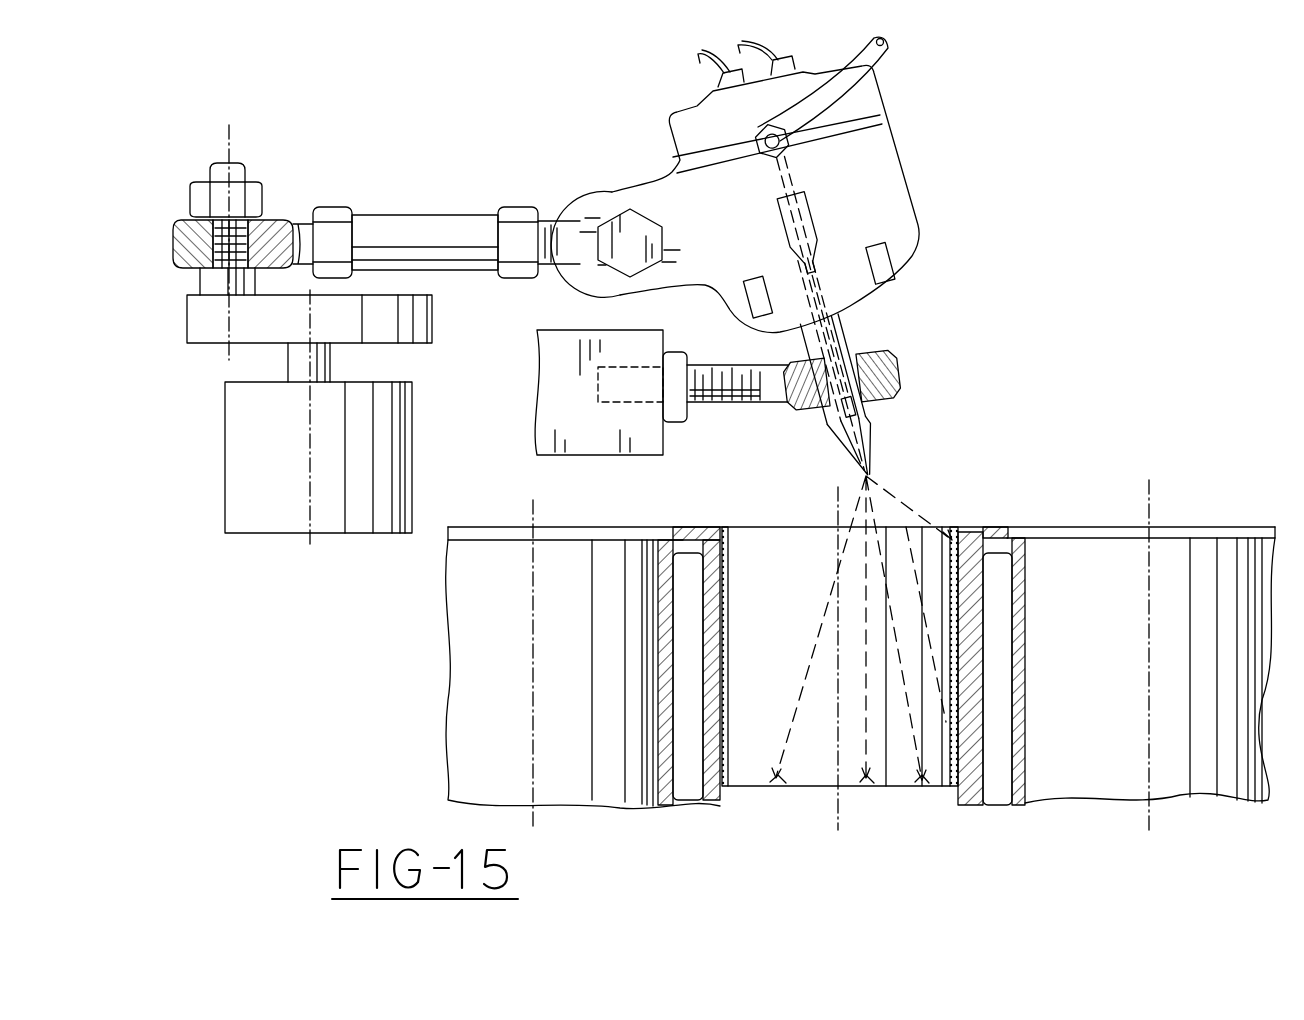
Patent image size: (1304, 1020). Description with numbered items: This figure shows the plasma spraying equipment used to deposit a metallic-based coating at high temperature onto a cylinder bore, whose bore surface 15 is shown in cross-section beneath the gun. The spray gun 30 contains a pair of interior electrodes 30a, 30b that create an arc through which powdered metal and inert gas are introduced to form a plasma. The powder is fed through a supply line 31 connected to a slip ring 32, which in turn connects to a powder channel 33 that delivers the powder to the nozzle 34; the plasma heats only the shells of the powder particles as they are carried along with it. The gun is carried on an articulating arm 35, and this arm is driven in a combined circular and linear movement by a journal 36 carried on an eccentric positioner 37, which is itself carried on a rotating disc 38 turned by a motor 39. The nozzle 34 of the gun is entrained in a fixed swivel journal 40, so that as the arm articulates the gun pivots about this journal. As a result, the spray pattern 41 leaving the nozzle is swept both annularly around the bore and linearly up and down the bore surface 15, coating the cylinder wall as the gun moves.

The bore surface 15 is at (728, 640).
The spray gun 30 is at (905, 139).
The interior electrode 30a is at (833, 412).
The interior electrode 30b is at (838, 440).
The supply line 31 is at (884, 48).
The slip ring 32 is at (866, 107).
The powder channel 33 is at (781, 160).
The nozzle 34 is at (875, 455).
The articulating arm 35 is at (393, 232).
The journal 36 is at (255, 228).
The eccentric positioner 37 is at (217, 282).
The rotating disc 38 is at (383, 325).
The motor 39 is at (381, 437).
The fixed swivel journal 40 is at (868, 362).
The spray pattern 41 is at (917, 508).